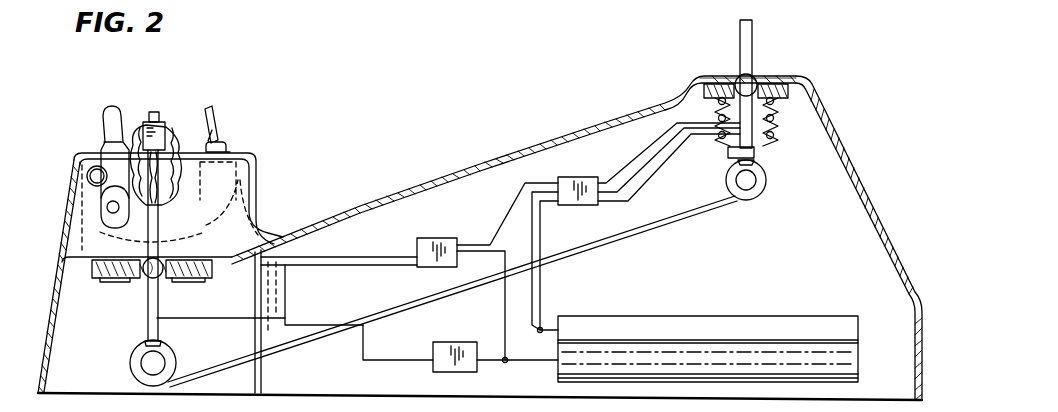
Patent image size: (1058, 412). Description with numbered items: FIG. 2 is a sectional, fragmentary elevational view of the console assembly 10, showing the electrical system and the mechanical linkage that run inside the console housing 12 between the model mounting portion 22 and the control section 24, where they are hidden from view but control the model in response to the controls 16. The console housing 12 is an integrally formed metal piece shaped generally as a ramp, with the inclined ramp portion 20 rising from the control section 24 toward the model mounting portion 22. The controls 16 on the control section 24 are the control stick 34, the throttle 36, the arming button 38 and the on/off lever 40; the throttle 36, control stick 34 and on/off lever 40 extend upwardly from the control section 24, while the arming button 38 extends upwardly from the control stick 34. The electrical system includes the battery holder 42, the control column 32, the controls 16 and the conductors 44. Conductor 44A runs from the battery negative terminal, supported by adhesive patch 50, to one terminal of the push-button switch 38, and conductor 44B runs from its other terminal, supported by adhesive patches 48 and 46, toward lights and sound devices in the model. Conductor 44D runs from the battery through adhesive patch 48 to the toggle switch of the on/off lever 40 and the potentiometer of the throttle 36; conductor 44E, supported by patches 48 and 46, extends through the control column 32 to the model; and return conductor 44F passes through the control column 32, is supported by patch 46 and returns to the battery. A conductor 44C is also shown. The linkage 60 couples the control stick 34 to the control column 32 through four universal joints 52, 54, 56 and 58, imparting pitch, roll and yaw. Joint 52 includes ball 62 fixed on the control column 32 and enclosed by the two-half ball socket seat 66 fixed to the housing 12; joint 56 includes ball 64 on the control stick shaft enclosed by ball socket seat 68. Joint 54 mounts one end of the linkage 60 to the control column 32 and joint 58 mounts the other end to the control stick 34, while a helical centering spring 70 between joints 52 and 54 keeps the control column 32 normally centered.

The vehicle control console assembly 10 is at (426, 127).
The console housing 12 is at (611, 115).
The controls 16 is at (228, 84).
The ramp portion 20 is at (445, 178).
The model mounting portion 22 is at (856, 152).
The control section 24 is at (46, 340).
The control column 32 is at (740, 30).
The control stick 34 is at (150, 104).
The throttle 36 is at (108, 118).
The arming button 38 is at (157, 115).
The on/off lever 40 is at (216, 116).
The battery holder 42 is at (758, 320).
The conductors 44 is at (679, 145).
The conductor 44A is at (415, 362).
The conductor 44B is at (291, 296).
The wire 44C is at (541, 236).
The conductor 44D is at (328, 255).
The conductor 44E is at (406, 234).
The return conductor 44F is at (538, 300).
The adhesive patch 46 is at (583, 178).
The adhesive patch 48 is at (417, 264).
The adhesive patch 50 is at (460, 342).
The universal joint 52 is at (782, 108).
The universal joint 54 is at (767, 184).
The universal joint 56 is at (138, 288).
The universal joint 58 is at (130, 364).
The linkage 60 is at (707, 214).
The ball 62 is at (737, 76).
The ball 64 is at (147, 260).
The ball socket seat 66 is at (757, 75).
The ball socket seat 68 is at (163, 262).
The helical centering spring 70 is at (766, 142).